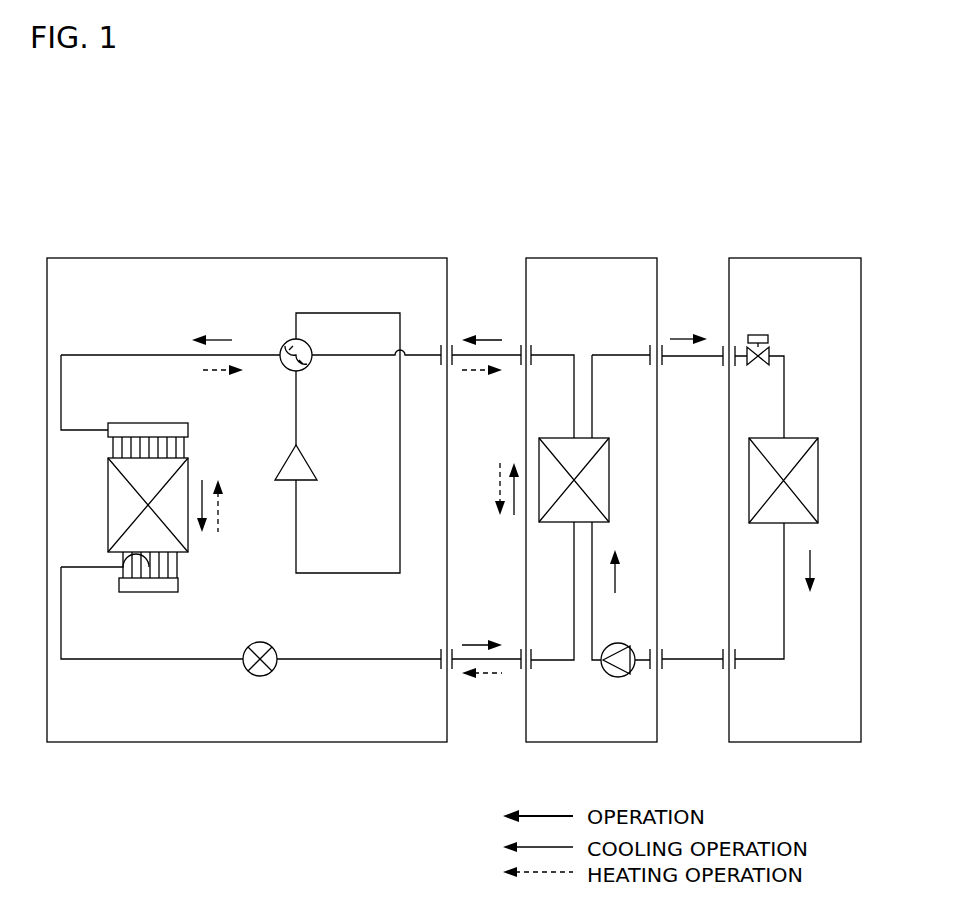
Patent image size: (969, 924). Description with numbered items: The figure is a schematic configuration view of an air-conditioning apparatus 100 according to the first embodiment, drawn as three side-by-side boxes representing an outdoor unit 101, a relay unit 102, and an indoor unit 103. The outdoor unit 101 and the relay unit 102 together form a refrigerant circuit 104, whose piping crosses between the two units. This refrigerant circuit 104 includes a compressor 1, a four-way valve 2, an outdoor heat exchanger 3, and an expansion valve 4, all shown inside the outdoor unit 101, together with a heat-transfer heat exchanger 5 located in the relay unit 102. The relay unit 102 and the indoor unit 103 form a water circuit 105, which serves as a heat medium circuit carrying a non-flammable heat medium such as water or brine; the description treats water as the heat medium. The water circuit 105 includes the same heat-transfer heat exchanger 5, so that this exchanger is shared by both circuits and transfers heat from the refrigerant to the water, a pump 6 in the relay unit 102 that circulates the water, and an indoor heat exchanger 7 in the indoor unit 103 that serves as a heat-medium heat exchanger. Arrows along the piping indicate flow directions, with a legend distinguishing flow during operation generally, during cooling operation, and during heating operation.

The compressor 1 is at (310, 464).
The four-way valve 2 is at (284, 344).
The outdoor heat exchanger 3 is at (108, 498).
The expansion valve 4 is at (268, 644).
The heat-transfer heat exchanger 5 is at (609, 490).
The pump 6 is at (620, 644).
The indoor heat exchanger 7 is at (819, 490).
The air-conditioning apparatus 100 is at (686, 210).
The outdoor unit 101 is at (333, 258).
The relay unit 102 is at (603, 258).
The indoor unit 103 is at (788, 258).
The refrigerant circuit 104 is at (510, 352).
The water circuit 105 is at (717, 352).